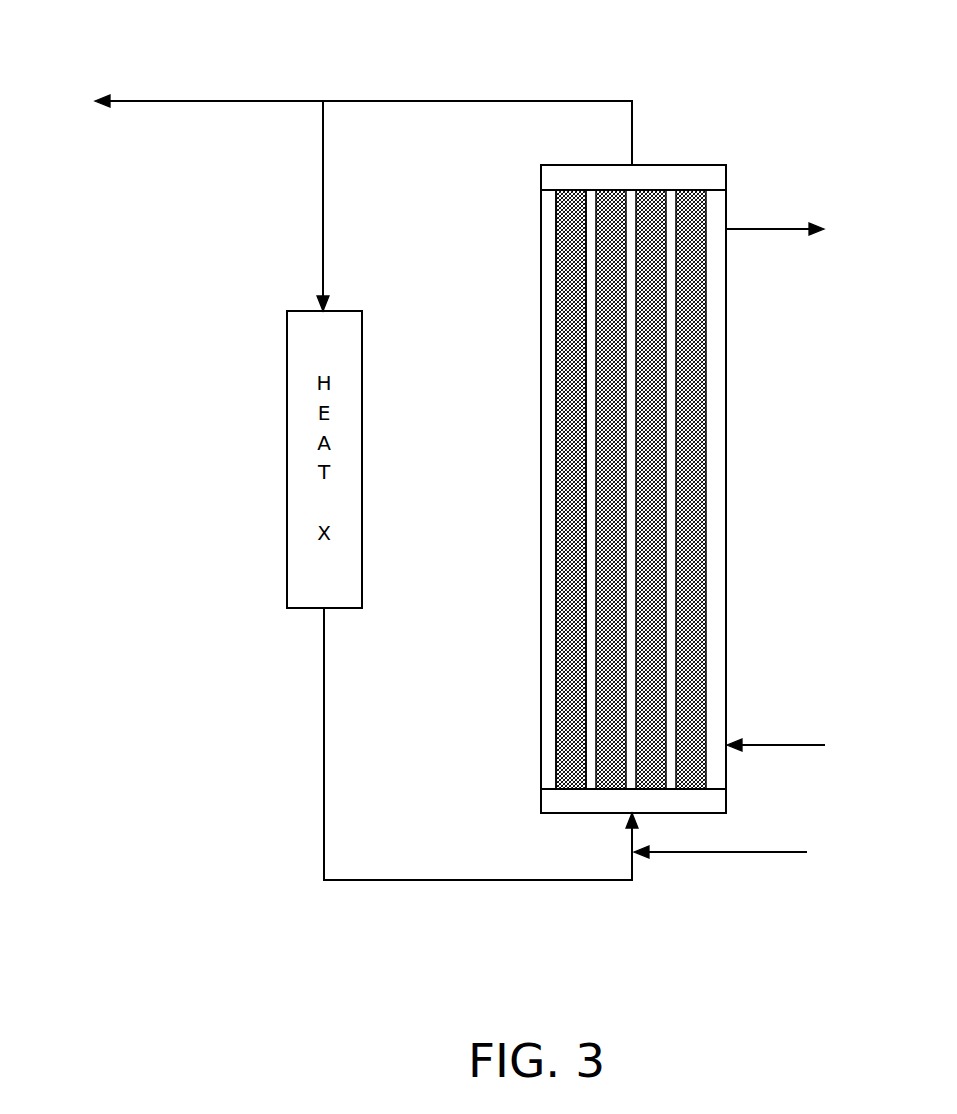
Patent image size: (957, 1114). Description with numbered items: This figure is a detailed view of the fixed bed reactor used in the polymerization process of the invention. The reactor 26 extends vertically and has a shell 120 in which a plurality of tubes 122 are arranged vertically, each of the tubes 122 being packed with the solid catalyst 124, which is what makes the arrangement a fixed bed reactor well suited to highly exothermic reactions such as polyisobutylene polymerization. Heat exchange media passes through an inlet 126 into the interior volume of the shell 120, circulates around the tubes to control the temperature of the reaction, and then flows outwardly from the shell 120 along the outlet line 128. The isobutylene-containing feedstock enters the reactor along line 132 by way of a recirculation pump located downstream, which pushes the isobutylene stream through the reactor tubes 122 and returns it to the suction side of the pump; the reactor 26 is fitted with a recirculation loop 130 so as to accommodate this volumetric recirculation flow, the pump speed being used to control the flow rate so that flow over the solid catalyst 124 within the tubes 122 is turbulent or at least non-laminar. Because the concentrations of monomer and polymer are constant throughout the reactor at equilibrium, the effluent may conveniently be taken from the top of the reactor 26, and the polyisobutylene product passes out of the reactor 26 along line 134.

The reactor 26 is at (726, 474).
The shell 120 is at (726, 612).
The tubes 122 is at (566, 382).
The solid catalyst 124 is at (566, 242).
The inlet 126 is at (788, 744).
The outlet line 128 is at (773, 228).
The recirculation loop 130 is at (323, 200).
The feed line 132 is at (733, 854).
The effluent line 134 is at (523, 100).